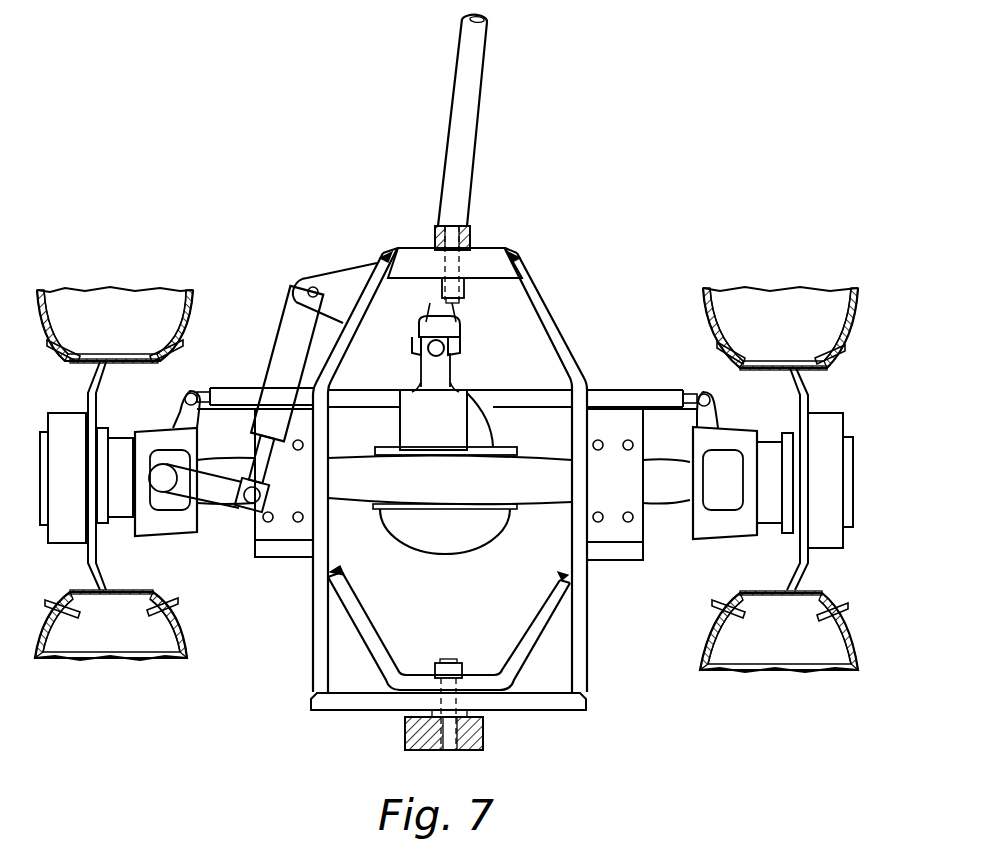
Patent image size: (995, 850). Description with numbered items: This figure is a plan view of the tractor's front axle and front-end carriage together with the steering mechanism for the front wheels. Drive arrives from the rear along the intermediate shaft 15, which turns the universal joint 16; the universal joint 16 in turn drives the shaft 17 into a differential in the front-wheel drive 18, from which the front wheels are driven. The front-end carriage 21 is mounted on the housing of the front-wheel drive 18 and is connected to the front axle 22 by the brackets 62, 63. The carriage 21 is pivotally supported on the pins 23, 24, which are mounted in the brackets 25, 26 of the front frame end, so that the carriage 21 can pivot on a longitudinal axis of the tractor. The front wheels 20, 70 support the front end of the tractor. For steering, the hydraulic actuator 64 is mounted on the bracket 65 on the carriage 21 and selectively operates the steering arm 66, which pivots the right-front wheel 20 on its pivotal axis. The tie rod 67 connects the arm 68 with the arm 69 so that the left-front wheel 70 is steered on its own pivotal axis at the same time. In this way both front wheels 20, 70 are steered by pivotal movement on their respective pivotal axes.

The intermediate shaft 15 is at (472, 101).
The universal joint 16 is at (460, 352).
The shaft 17 is at (418, 382).
The front-wheel drive 18 is at (424, 543).
The front wheel 20 is at (172, 618).
The front-end carriage 21 is at (306, 672).
The front axle 22 is at (350, 497).
The pin 23 is at (452, 228).
The pin 24 is at (445, 742).
The bracket 25 is at (470, 236).
The bracket 26 is at (485, 732).
The bracket 62 is at (282, 535).
The bracket 63 is at (614, 537).
The hydraulic actuator 64 is at (287, 345).
The bracket 65 is at (343, 276).
The steering arm 66 is at (224, 497).
The tie rod 67 is at (617, 395).
The arm 68 is at (173, 401).
The arm 69 is at (720, 412).
The front wheel 70 is at (700, 663).